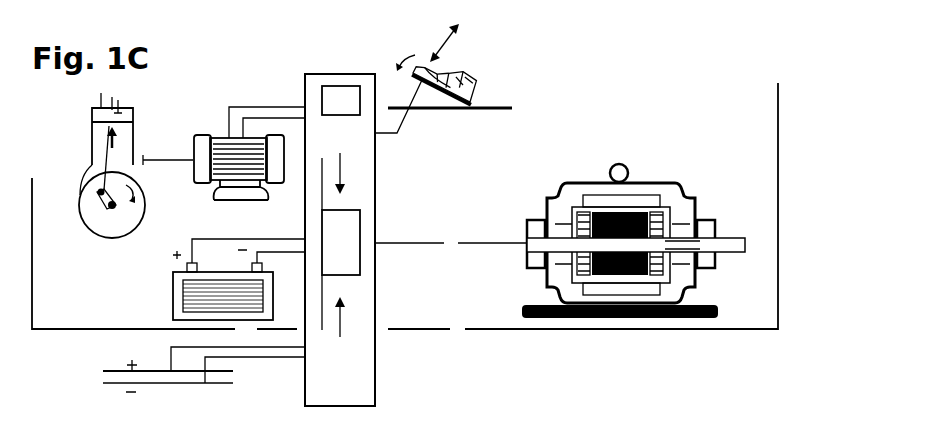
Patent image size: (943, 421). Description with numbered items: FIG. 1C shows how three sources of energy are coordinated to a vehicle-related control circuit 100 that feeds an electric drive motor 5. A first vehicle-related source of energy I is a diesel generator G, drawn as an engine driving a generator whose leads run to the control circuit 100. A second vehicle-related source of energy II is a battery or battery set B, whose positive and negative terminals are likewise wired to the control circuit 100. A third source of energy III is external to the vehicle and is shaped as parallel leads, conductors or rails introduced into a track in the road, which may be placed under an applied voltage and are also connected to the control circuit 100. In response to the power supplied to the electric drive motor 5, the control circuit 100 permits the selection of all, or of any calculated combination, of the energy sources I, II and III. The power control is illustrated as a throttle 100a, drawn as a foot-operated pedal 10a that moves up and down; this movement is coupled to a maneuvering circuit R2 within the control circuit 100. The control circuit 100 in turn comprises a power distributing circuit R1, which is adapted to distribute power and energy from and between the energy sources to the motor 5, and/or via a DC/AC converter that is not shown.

The first source of energy I is at (137, 163).
The diesel generator G is at (222, 201).
The second source of energy II is at (115, 267).
The battery or battery set B is at (176, 307).
The third source of energy III is at (174, 369).
The control circuit 100 is at (366, 395).
The maneuvering circuit R2 is at (330, 93).
The power distributing circuit R1 is at (345, 257).
The pedal 10a is at (387, 133).
The throttle 100a is at (424, 44).
The electric drive motor 5 is at (645, 183).